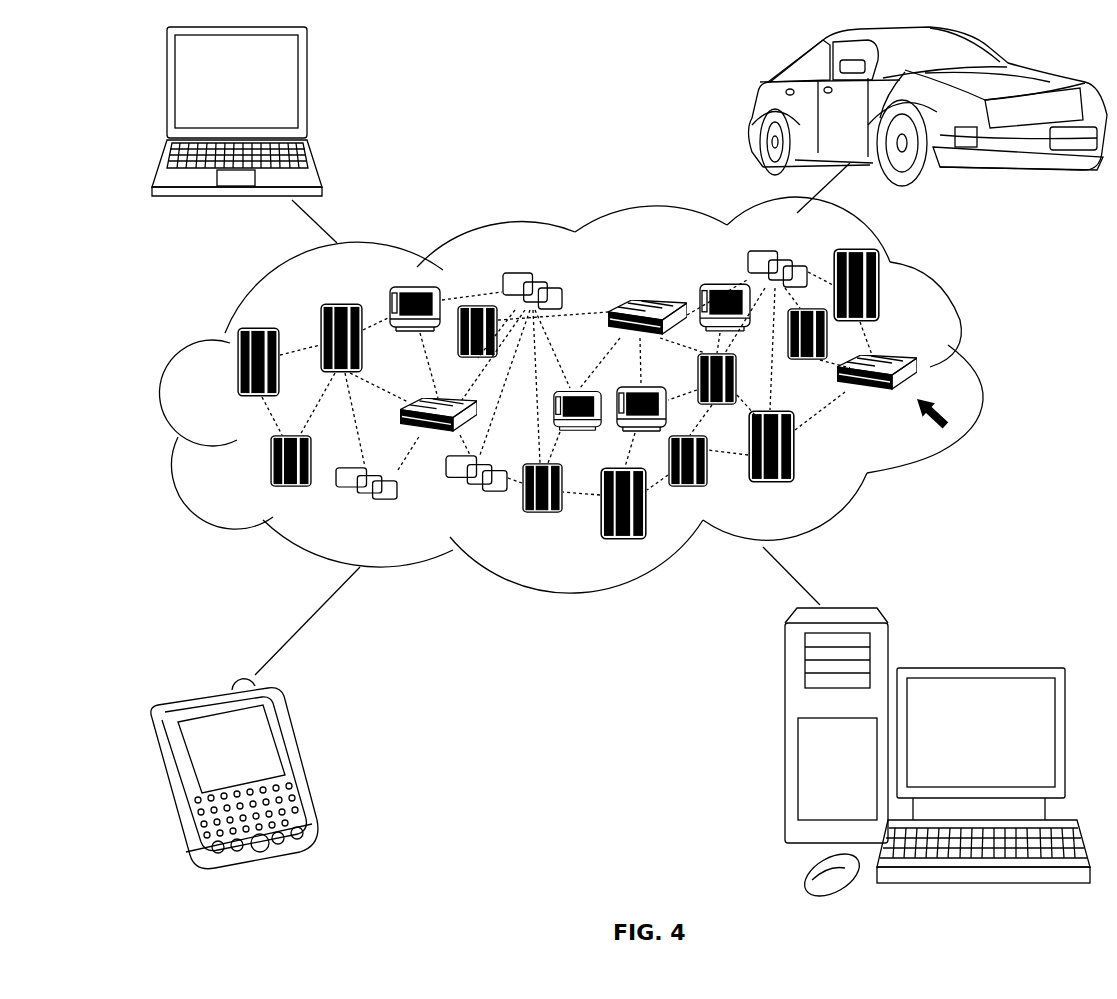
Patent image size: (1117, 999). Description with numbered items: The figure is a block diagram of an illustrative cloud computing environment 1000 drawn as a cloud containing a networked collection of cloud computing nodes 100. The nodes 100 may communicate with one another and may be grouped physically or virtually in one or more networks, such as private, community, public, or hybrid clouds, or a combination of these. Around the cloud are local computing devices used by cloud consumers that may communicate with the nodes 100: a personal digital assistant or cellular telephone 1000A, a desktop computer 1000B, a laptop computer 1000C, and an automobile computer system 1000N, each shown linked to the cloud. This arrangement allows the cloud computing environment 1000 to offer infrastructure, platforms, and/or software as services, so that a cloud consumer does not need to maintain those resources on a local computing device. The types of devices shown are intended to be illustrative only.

The cloud computing environment 1000 is at (978, 374).
The cloud computing nodes 100 is at (947, 425).
The personal digital assistant or cellular telephone 1000A is at (300, 764).
The desktop computer 1000B is at (981, 660).
The laptop computer 1000C is at (309, 93).
The automobile computer system 1000N is at (755, 110).